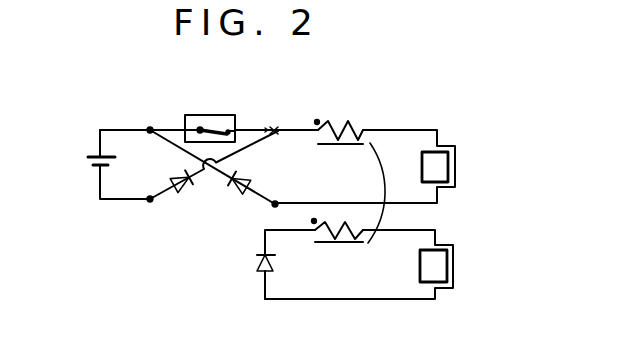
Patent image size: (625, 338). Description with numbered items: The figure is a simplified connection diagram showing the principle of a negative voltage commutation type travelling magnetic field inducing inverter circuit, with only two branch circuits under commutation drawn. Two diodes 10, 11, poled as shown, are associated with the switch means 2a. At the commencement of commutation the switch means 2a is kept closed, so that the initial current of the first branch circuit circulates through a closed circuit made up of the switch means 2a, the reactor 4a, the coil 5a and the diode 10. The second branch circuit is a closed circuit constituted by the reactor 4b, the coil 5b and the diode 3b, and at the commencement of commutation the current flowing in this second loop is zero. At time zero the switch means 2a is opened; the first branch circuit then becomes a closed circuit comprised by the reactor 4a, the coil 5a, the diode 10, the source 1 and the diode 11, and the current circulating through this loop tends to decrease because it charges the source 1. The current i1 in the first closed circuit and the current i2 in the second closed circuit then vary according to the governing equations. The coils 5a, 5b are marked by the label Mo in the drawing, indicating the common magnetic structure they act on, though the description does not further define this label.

The source 1 is at (90, 157).
The switch means 2a is at (194, 114).
The diode 3b is at (257, 260).
The reactor 4a is at (338, 121).
The reactor 4b is at (342, 243).
The coil 5a is at (456, 163).
The coil 5b is at (453, 268).
The diode 10 is at (233, 191).
The diode 11 is at (174, 194).
The motor Mo is at (396, 193).
The current i1 is at (280, 141).
The current i2 is at (272, 235).